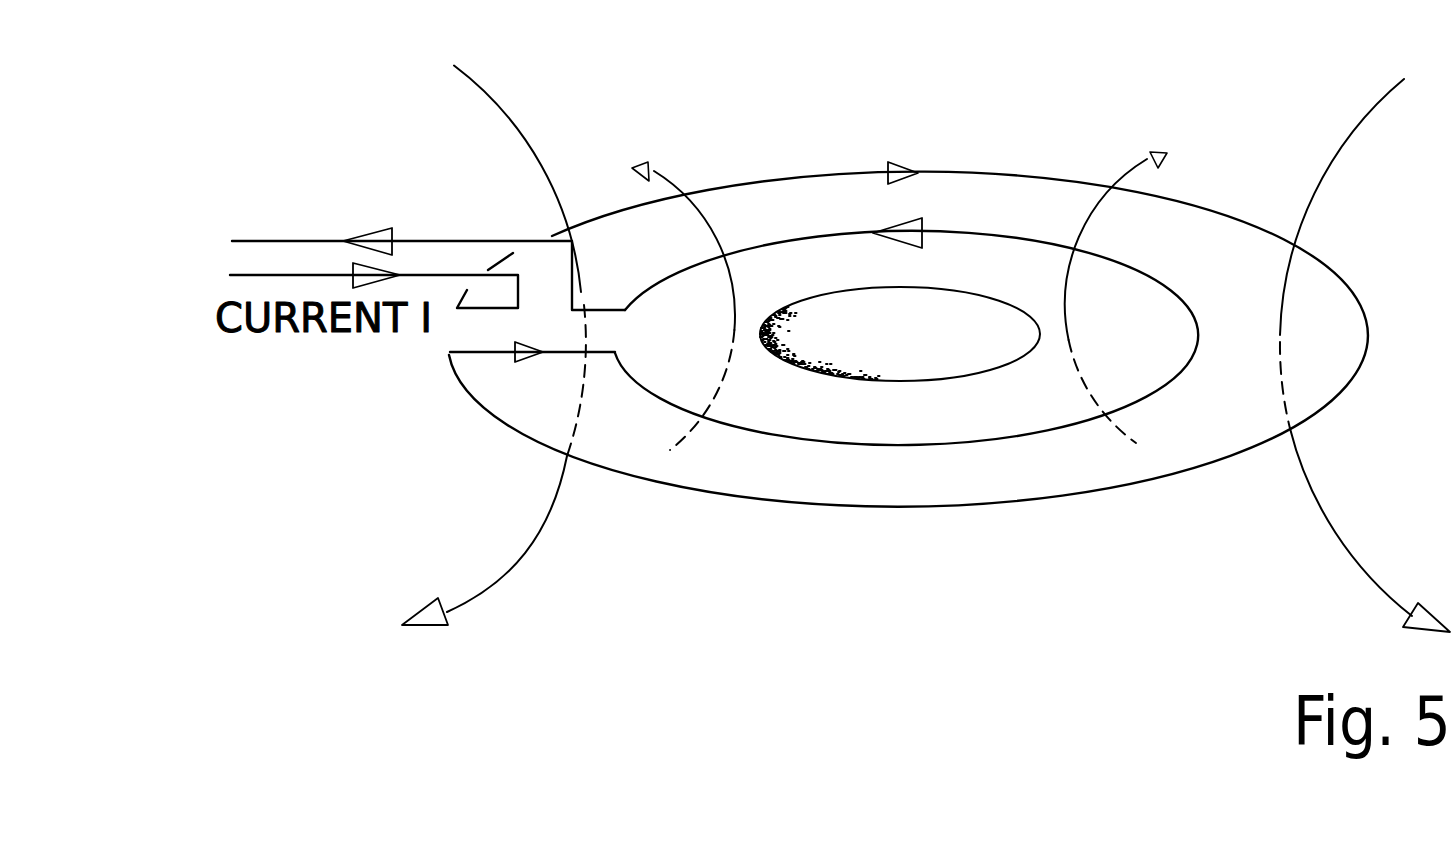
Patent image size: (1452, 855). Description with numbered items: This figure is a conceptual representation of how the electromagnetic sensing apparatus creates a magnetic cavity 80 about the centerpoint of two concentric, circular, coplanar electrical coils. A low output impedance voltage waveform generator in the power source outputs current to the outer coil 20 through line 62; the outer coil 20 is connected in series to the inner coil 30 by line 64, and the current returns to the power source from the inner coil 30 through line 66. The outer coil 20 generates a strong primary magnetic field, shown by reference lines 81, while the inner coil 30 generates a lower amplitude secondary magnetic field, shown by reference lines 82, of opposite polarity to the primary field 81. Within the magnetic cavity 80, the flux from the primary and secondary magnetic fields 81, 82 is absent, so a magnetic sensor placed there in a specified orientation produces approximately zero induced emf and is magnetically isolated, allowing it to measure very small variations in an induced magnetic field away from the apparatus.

The outer coil 20 is at (820, 175).
The inner coil 30 is at (817, 443).
The line 62 is at (258, 275).
The line 64 is at (450, 352).
The line 66 is at (260, 240).
The magnetic cavity 80 is at (935, 315).
The primary magnetic field 81 is at (500, 105).
The secondary magnetic field 82 is at (654, 171).